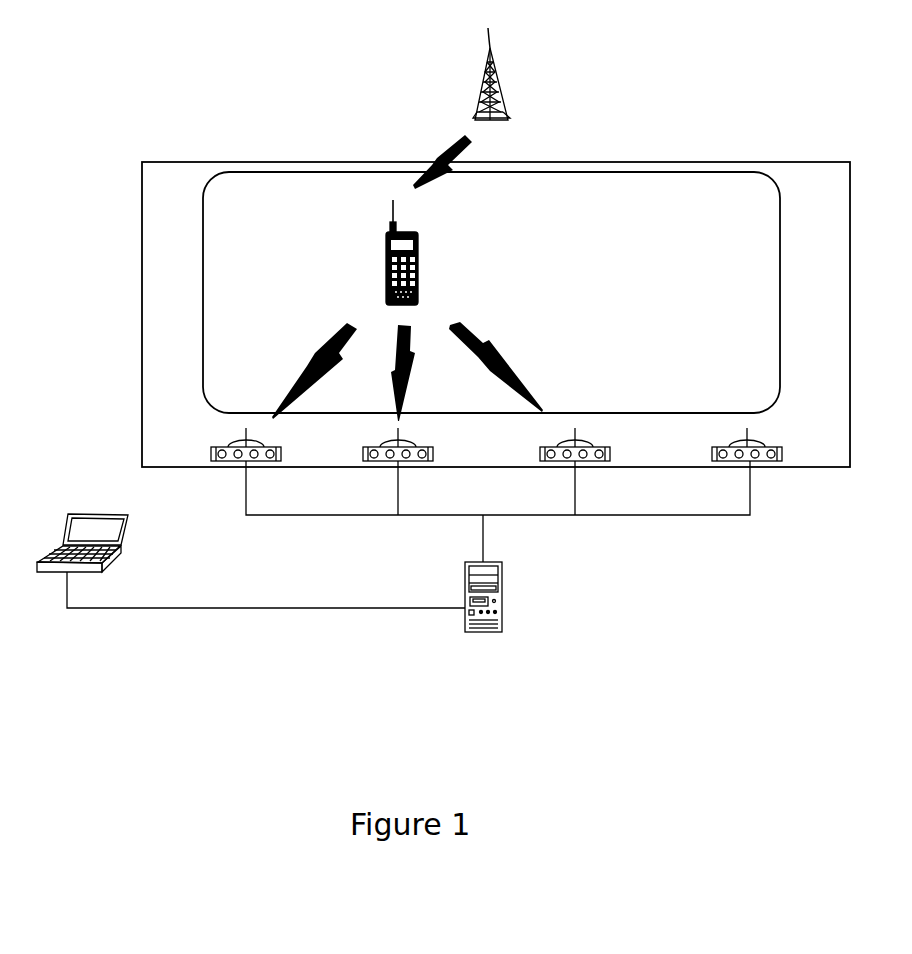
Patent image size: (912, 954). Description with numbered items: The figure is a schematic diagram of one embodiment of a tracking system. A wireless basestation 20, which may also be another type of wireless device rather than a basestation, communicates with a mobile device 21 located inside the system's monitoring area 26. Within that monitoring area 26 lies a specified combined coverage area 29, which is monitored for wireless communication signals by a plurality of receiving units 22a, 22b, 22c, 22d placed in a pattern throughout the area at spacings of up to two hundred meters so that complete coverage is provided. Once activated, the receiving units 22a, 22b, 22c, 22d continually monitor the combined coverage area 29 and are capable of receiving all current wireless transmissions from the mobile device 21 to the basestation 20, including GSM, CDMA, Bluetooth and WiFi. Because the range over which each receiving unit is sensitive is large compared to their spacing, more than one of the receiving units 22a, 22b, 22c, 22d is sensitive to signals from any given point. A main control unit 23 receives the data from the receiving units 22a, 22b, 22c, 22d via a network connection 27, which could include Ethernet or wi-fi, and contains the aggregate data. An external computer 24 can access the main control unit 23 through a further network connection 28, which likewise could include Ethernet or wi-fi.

The wireless basestation 20 is at (490, 57).
The mobile device 21 is at (385, 253).
The receiving unit 22a is at (262, 460).
The receiving unit 22b is at (410, 460).
The receiving unit 22c is at (585, 460).
The receiving unit 22d is at (765, 460).
The main control unit 23 is at (505, 595).
The external computer 24 is at (122, 545).
The monitoring area 26 is at (142, 320).
The network connection 27 is at (702, 515).
The further network connection 28 is at (302, 608).
The combined coverage area 29 is at (203, 185).